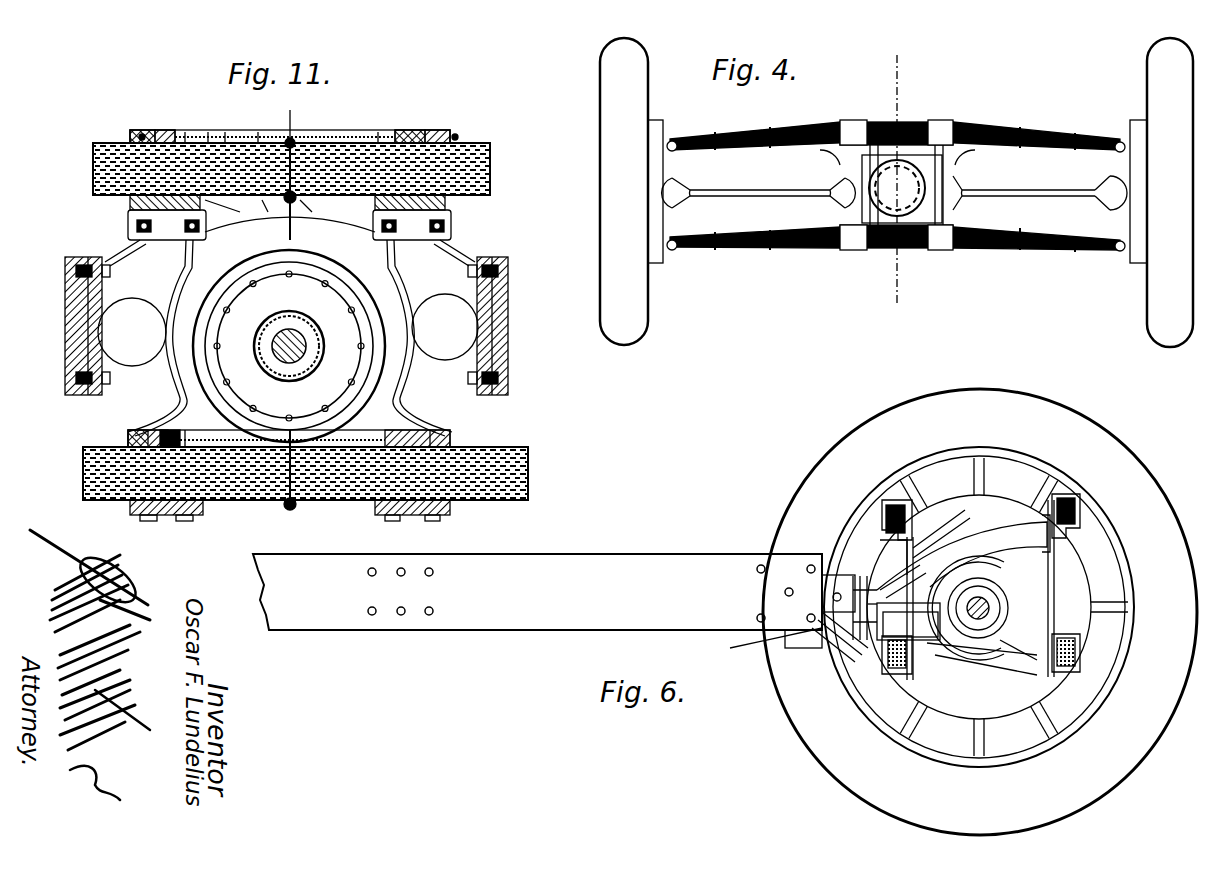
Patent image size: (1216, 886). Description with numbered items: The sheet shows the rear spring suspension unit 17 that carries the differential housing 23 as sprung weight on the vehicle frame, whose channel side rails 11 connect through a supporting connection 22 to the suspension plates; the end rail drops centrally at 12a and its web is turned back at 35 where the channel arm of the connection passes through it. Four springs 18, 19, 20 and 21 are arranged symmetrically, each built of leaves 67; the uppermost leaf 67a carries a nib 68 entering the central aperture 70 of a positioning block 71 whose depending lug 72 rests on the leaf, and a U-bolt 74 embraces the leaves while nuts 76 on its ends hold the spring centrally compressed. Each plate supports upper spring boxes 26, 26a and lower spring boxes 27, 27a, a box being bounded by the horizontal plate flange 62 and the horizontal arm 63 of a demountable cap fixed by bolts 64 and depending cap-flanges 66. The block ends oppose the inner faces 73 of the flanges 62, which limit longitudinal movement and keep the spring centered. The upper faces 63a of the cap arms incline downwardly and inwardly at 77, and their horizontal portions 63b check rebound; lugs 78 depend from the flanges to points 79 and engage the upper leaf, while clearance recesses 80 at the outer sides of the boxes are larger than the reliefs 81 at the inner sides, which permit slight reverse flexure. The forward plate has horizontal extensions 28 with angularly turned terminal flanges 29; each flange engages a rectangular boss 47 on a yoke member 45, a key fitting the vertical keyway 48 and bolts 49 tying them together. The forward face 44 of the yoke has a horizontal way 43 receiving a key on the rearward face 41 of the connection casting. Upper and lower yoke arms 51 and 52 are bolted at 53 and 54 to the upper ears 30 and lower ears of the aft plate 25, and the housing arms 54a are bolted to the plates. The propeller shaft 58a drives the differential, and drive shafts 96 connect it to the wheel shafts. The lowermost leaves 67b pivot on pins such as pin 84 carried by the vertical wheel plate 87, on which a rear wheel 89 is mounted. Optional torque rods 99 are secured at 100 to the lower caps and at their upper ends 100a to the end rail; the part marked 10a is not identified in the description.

In FIG. 4, the channel side rail 11 is at (897, 85).
In FIG. 6, the channel side rail 11 is at (537, 592).
In FIG. 6, the dropped central portion of end rail 12a is at (800, 648).
In FIG. 4, the rear spring suspension unit 17 is at (932, 116).
In FIG. 11, the spring 18 is at (108, 143).
In FIG. 6, the spring 18 is at (892, 500).
In FIG. 4, the spring 19 is at (1050, 132).
In FIG. 6, the spring 19 is at (1066, 496).
In FIG. 11, the lower spring 20 is at (83, 470).
In FIG. 6, the lower spring 20 is at (892, 675).
In FIG. 4, the spring 21 is at (1048, 240).
In FIG. 6, the spring 21 is at (1068, 674).
In FIG. 6, the supporting connection assembly 22 is at (870, 576).
In FIG. 4, the differential housing 23 is at (897, 188).
In FIG. 4, the aft suspension plate 25 is at (862, 206).
In FIG. 6, the aft suspension plate 25 is at (1008, 580).
In FIG. 11, the upper spring box 26 is at (410, 130).
In FIG. 4, the upper spring box 26 is at (853, 120).
In FIG. 6, the upper spring box 26 is at (884, 508).
In FIG. 11, the upper spring box 26a is at (140, 130).
In FIG. 4, the upper spring box 26a is at (945, 120).
In FIG. 11, the lower spring box 27 is at (452, 432).
In FIG. 4, the lower spring box 27 is at (850, 250).
In FIG. 11, the lower spring box 27a is at (128, 434).
In FIG. 4, the lower spring box 27a is at (940, 250).
In FIG. 11, the horizontal extension 28 is at (120, 248).
In FIG. 11, the terminal flange 29 is at (108, 300).
In FIG. 4, the upper ear 30 is at (825, 152).
In FIG. 6, the turned back web portion 35 is at (822, 582).
In FIG. 6, the rearward face 41 is at (908, 621).
In FIG. 6, the horizontal way 43 is at (890, 602).
In FIG. 6, the forward face 44 is at (915, 552).
In FIG. 6, the yoke member 45 is at (850, 596).
In FIG. 11, the rectangular boss 47 is at (70, 315).
In FIG. 11, the keyway 48 is at (74, 270).
In FIG. 11, the bolts 49 is at (74, 378).
In FIG. 6, the upper yoke arm 51 is at (962, 556).
In FIG. 6, the lower yoke arm 52 is at (995, 668).
In FIG. 6, the bolted connection of upper yoke arm 53 is at (1042, 520).
In FIG. 6, the bolted connection of lower yoke arm 54 is at (1012, 650).
In FIG. 6, the housing arm 54a is at (935, 508).
In FIG. 11, the propeller shaft 58a is at (290, 330).
In FIG. 11, the horizontal plate flange 62 is at (162, 130).
In FIG. 11, the horizontal cap arm 63 is at (289, 217).
In FIG. 11, the upper face of cap arm 63a is at (93, 172).
In FIG. 11, the horizontal portion of cap arm face 63b is at (480, 196).
In FIG. 11, the cap bolt 64 is at (266, 208).
In FIG. 11, the depending cap-flange 66 is at (206, 226).
In FIG. 11, the spring leaf 67 is at (490, 160).
In FIG. 4, the spring leaf 67 is at (744, 142).
In FIG. 11, the uppermost leaf 67a is at (480, 145).
In FIG. 11, the lowermost leaf 67b is at (490, 192).
In FIG. 4, the lowermost leaf 67b is at (744, 247).
In FIG. 11, the inter-fitting nib 68 is at (313, 208).
In FIG. 11, the central aperture 70 is at (292, 119).
In FIG. 11, the positioning block 71 is at (225, 130).
In FIG. 11, the depending lug 72 is at (258, 130).
In FIG. 11, the inner flange face 73 is at (208, 130).
In FIG. 11, the U-bolt 74 is at (290, 324).
In FIG. 4, the U-bolt 74 is at (893, 140).
In FIG. 4, the nut 76 is at (748, 196).
In FIG. 11, the inclined face portion 77 is at (227, 207).
In FIG. 11, the depending lug 78 is at (165, 430).
In FIG. 11, the lug end point 79 is at (185, 130).
In FIG. 11, the clearance recess 80 is at (130, 135).
In FIG. 11, the relief recess 81 is at (352, 130).
In FIG. 11, the pin 84 is at (383, 346).
In FIG. 4, the vertical wheel plate 87 is at (1130, 160).
In FIG. 4, the rear wheel 89 is at (896, 192).
In FIG. 6, the rear wheel 89 is at (1078, 428).
In FIG. 6, the drive shaft 96 is at (990, 608).
In FIG. 6, the torque rod 99 is at (838, 645).
In FIG. 6, the torque rod lower connection 100 is at (848, 668).
In FIG. 6, the torque rod upper end 100a is at (767, 645).
In FIG. 6, the spring leaf 10a is at (874, 557).